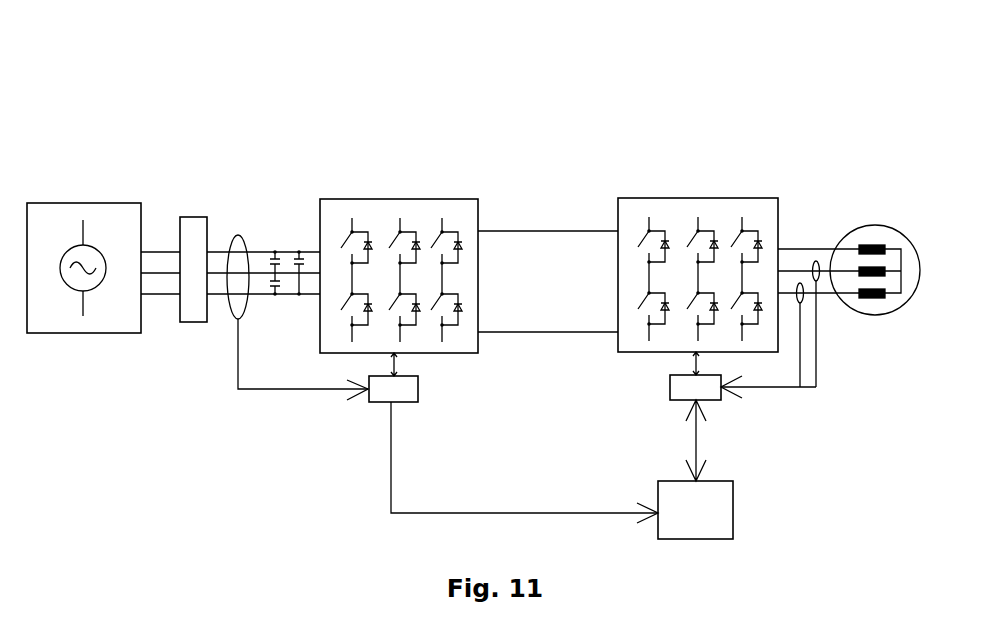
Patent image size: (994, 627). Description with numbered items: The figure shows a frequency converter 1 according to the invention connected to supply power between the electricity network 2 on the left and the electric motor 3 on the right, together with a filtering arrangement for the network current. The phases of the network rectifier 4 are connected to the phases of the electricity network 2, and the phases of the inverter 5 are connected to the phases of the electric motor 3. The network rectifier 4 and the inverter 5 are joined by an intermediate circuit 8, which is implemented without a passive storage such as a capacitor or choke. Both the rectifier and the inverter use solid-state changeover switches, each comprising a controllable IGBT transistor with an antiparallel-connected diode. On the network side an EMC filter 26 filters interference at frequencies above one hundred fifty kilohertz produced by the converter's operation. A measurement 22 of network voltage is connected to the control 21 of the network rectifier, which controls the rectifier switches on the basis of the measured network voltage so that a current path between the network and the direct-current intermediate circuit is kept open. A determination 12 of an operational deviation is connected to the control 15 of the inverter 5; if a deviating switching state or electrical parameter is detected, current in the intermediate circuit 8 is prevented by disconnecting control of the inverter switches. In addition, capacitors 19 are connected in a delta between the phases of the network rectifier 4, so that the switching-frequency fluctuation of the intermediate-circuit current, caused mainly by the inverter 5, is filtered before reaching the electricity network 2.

The frequency converter 1 is at (647, 113).
The electricity network 2 is at (75, 202).
The electric motor 3 is at (863, 223).
The network rectifier 4 is at (390, 199).
The inverter 5 is at (717, 197).
The intermediate circuit 8 is at (533, 230).
The determination of an operational deviation 12 is at (733, 505).
The control of the inverter 15 is at (667, 386).
The capacitors 19 is at (299, 250).
The control of the network rectifier 21 is at (376, 402).
The measurement of network voltage 22 is at (236, 367).
The EMC filter 26 is at (193, 217).